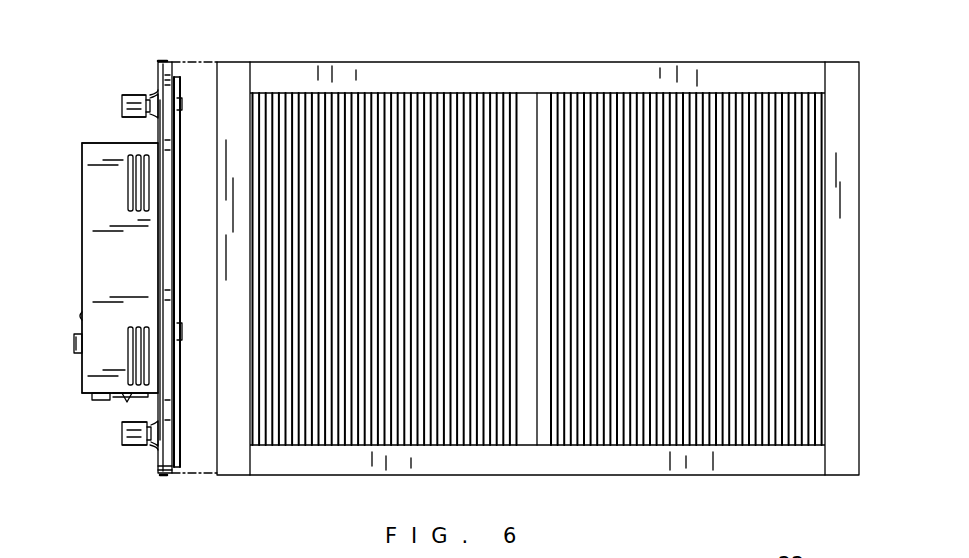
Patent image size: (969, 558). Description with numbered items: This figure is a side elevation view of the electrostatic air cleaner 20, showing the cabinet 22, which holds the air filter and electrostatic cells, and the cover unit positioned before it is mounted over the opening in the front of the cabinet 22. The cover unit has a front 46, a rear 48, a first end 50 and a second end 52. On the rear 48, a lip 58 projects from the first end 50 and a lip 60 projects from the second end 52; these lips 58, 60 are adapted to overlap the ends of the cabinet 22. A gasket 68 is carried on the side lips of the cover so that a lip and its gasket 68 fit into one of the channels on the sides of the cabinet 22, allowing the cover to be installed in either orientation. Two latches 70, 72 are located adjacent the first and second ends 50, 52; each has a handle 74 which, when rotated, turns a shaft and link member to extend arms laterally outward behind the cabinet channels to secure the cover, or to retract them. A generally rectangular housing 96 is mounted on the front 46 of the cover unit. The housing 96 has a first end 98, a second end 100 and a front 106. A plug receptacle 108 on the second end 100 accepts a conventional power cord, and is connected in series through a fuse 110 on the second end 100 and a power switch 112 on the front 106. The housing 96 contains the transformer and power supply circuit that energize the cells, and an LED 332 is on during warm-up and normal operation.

The electrostatic air cleaner 20 is at (155, 482).
The cabinet 22 is at (683, 62).
The front 46 is at (115, 410).
The rear 48 is at (192, 400).
The first end 50 is at (147, 52).
The second end 52 is at (143, 468).
The lip 58 is at (159, 62).
The lip 60 is at (160, 477).
The gasket 68 is at (167, 137).
The latch 70 is at (110, 108).
The latch 72 is at (135, 450).
The handle 74 is at (137, 98).
The housing 96 is at (90, 243).
The first end 98 is at (115, 135).
The second end 100 is at (75, 407).
The front 106 is at (82, 190).
The plug receptacle 108 is at (124, 392).
The fuse 110 is at (92, 396).
The power switch 112 is at (74, 343).
The LED 332 is at (80, 316).